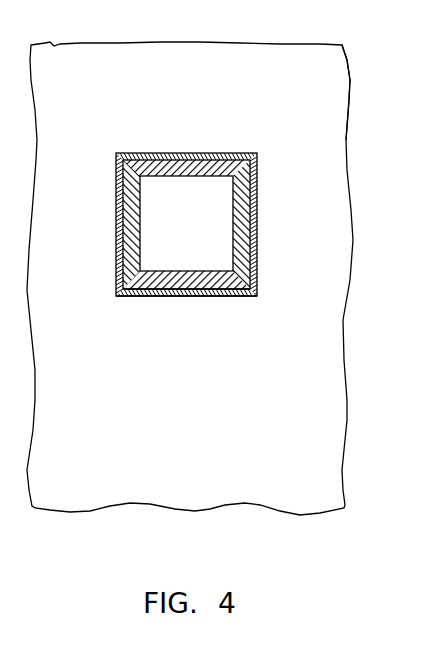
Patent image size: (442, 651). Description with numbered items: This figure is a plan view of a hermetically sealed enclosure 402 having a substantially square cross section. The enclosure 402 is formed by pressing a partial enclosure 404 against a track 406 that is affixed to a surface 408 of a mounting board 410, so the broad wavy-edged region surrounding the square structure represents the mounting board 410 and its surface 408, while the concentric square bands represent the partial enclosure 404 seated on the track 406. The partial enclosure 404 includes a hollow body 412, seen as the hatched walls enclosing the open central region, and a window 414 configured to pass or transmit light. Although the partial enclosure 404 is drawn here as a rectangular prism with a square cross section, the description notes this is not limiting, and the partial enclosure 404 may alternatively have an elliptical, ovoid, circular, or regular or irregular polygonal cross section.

The hermetically sealed enclosure 402 is at (207, 240).
The partial enclosure 404 is at (152, 153).
The track 406 is at (203, 153).
The surface 408 is at (258, 461).
The mounting board 410 is at (348, 68).
The hollow body 412 is at (185, 297).
The window 414 is at (225, 235).